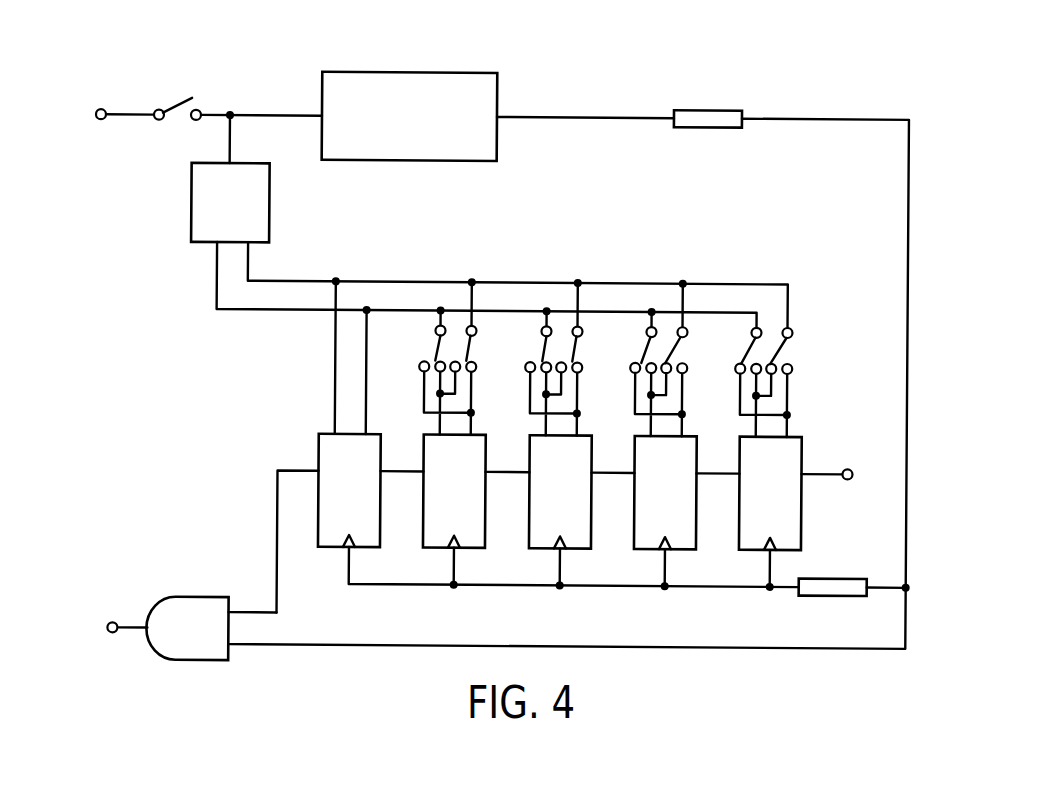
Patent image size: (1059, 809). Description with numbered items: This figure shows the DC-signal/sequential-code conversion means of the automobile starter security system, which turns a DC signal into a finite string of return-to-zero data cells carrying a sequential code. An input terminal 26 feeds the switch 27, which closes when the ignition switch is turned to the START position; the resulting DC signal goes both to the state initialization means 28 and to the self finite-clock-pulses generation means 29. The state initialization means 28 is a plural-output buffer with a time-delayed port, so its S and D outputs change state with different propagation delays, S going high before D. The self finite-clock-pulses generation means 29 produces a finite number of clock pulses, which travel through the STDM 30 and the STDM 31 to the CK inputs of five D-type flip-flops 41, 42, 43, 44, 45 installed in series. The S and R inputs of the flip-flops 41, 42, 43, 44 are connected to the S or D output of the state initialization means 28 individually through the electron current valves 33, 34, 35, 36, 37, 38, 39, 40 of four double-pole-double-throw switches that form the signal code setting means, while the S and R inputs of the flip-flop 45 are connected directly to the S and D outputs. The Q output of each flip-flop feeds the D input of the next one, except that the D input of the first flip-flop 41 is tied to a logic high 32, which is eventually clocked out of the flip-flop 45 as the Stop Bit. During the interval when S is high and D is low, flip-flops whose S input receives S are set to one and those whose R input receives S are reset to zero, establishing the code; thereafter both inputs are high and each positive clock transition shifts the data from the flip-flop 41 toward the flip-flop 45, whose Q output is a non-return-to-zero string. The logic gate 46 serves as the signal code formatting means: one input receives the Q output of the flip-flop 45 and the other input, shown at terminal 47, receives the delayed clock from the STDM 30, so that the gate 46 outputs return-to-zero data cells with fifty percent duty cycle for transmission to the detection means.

The input terminal 26 is at (99, 112).
The switch 27 is at (176, 106).
The state initialization means 28 is at (190, 203).
The self finite-clock-pulses generation means 29 is at (423, 73).
The STDM 30 is at (706, 109).
The STDM 31 is at (838, 594).
The logic high 32 is at (853, 466).
The electron current valve 33 is at (778, 350).
The electron current valve 34 is at (742, 353).
The electron current valve 35 is at (674, 350).
The electron current valve 36 is at (642, 352).
The electron current valve 37 is at (575, 348).
The electron current valve 38 is at (543, 352).
The electron current valve 39 is at (467, 345).
The electron current valve 40 is at (437, 351).
The D-type flip-flop 41 is at (802, 507).
The D-type flip-flop 42 is at (697, 510).
The D-type flip-flop 43 is at (592, 510).
The D-type flip-flop 44 is at (486, 515).
The D-type flip-flop 45 is at (381, 515).
The logic gate 46 is at (193, 599).
The input terminal 47 is at (107, 621).